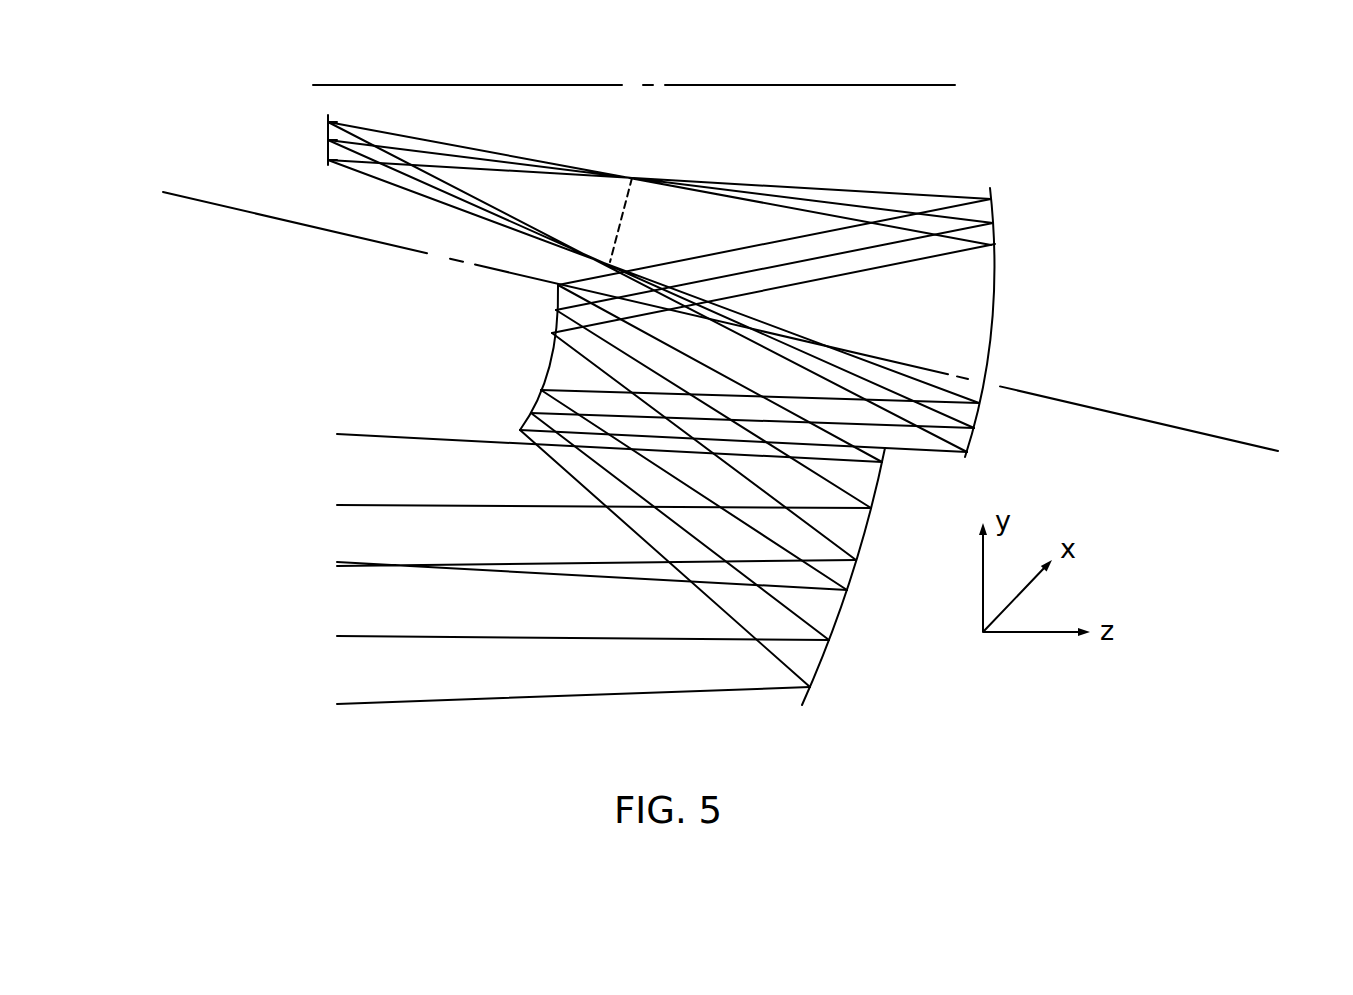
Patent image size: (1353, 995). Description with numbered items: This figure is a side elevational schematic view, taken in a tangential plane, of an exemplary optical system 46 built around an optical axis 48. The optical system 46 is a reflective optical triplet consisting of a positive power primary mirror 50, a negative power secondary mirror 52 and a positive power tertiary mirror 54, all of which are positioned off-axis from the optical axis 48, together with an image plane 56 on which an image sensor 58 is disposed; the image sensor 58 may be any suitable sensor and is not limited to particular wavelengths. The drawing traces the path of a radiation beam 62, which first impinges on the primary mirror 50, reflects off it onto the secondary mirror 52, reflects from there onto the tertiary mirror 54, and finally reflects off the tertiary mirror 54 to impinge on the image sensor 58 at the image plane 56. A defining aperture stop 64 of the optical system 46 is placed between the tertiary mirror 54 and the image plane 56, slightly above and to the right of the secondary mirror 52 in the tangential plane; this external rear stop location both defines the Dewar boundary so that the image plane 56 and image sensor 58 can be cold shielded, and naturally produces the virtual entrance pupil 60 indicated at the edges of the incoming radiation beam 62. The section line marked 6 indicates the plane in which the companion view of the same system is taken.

The section line 6- 6 is at (343, 74).
The optical system 46 is at (1065, 180).
The optical axis 48 is at (1171, 424).
The primary mirror 50 is at (822, 661).
The secondary mirror 52 is at (543, 360).
The tertiary mirror 54 is at (992, 343).
The image plane 56 is at (328, 148).
The image sensor 58 is at (352, 127).
The virtual entrance pupil 60 is at (334, 418).
The radiation beam 62 is at (330, 435).
The aperture stop 64 is at (636, 199).